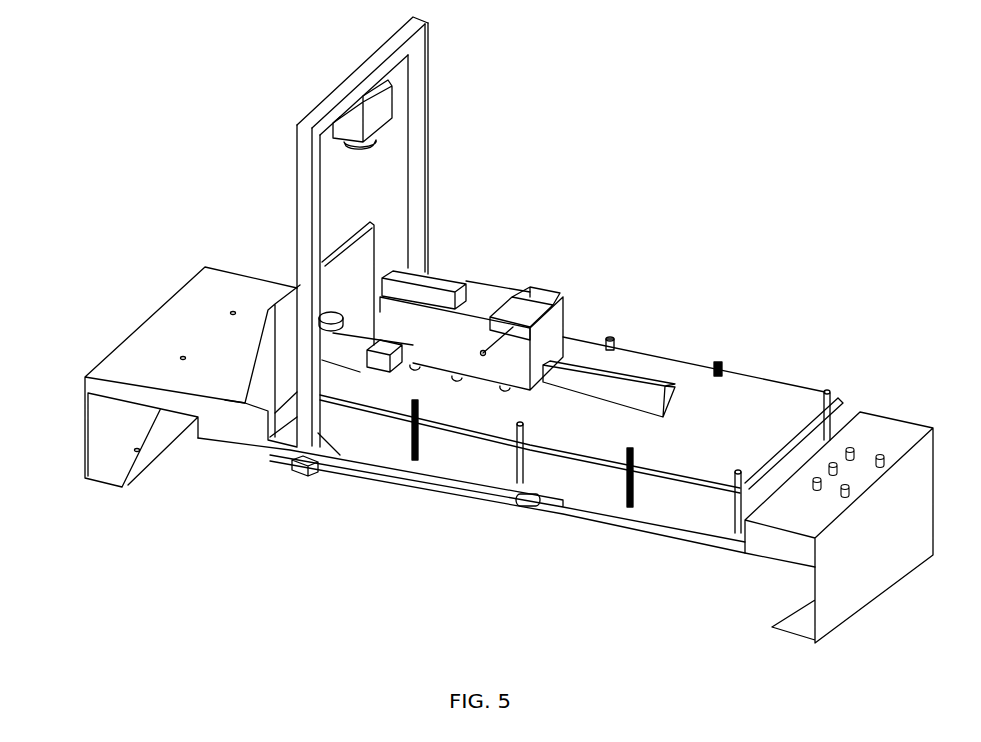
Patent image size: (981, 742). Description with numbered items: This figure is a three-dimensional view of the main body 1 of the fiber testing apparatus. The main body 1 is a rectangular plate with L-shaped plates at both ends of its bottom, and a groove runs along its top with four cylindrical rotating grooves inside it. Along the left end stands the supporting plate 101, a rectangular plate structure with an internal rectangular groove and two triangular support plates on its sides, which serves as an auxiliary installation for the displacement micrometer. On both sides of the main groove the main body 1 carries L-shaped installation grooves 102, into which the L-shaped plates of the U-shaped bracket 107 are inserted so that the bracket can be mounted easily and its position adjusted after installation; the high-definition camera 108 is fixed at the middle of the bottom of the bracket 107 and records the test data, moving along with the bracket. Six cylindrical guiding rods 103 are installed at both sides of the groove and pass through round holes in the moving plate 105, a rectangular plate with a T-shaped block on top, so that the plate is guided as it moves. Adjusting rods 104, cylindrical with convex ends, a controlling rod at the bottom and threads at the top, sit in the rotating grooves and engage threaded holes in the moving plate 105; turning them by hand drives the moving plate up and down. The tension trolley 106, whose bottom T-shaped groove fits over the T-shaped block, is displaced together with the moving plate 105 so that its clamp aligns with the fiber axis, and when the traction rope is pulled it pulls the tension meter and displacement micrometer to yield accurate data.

The main body 1 is at (120, 420).
The supporting plate 101 is at (258, 380).
The installation grooves 102 is at (520, 497).
The guiding rods 103 is at (470, 495).
The adjusting rods 104 is at (630, 490).
The moving plate 105 is at (647, 358).
The tension trolley 106 is at (550, 340).
The bracket 107 is at (430, 185).
The high-definition camera 108 is at (385, 110).